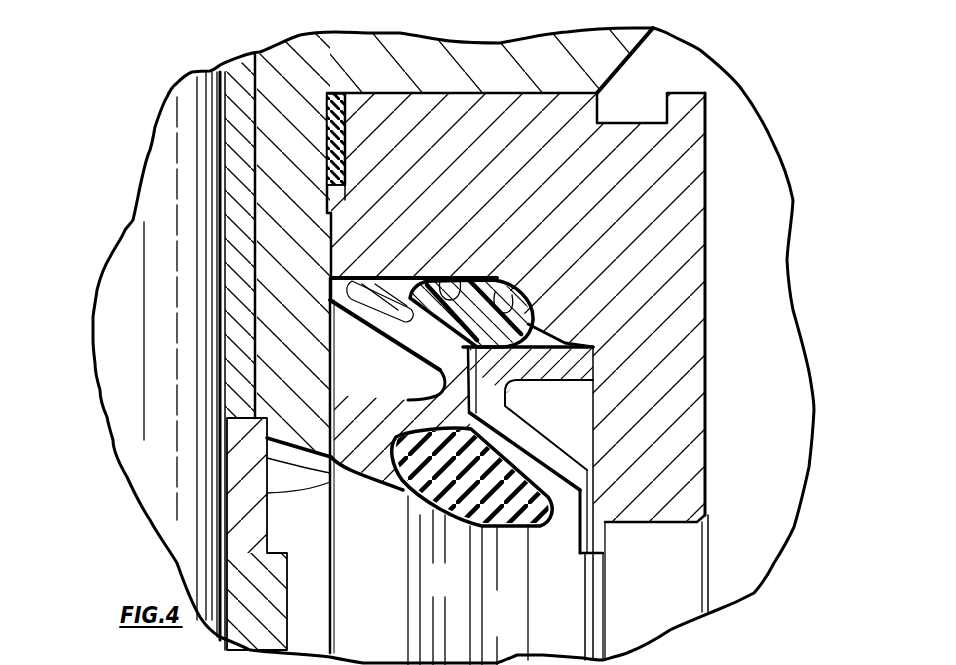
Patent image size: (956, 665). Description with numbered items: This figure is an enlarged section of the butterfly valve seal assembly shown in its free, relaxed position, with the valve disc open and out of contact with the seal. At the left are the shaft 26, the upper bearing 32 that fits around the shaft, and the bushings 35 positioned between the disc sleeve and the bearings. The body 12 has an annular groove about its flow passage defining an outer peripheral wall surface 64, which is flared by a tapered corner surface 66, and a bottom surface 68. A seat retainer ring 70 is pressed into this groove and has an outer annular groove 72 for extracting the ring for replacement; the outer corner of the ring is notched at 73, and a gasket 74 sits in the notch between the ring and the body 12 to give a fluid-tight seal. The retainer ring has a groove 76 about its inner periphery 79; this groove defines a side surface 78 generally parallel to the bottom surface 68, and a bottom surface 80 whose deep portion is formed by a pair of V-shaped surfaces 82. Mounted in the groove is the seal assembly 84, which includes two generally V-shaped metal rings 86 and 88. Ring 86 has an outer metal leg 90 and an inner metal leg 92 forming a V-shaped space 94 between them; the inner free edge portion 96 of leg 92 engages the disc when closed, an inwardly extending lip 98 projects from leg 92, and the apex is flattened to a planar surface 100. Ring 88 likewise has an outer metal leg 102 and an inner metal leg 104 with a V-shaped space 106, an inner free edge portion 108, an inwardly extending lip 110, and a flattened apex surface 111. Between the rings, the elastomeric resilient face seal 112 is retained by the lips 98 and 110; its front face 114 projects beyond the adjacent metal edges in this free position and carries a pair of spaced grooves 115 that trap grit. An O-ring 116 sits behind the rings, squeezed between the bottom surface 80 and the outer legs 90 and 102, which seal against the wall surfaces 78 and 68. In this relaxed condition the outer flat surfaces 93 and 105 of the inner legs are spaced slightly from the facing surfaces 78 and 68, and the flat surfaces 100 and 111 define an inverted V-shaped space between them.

The body 12 is at (440, 62).
The shaft 26 is at (183, 351).
The upper bearing 32 is at (233, 260).
The bushings 35 is at (227, 432).
The outer peripheral wall surface 64 is at (472, 98).
The tapered corner surface 66 is at (648, 45).
The bottom surface 68 is at (333, 212).
The seat retainer ring 70 is at (648, 198).
The outer annular groove 72 is at (638, 123).
The notch 73 is at (340, 137).
The gasket 74 is at (347, 125).
The groove 76 is at (590, 347).
The side surface 78 is at (590, 403).
The inner periphery 79 is at (667, 525).
The bottom surface 80 is at (378, 283).
The V-shaped surfaces 82 is at (455, 280).
The seal assembly 84 is at (340, 495).
The outer metal ring 86 is at (593, 350).
The outer metal ring 88 is at (387, 377).
The outer metal leg 90 is at (593, 367).
The inner metal leg 92 is at (550, 445).
The outer flat surface 93 is at (595, 500).
The V-shaped space 94 is at (545, 397).
The inner free edge portion 96 is at (600, 552).
The inwardly extending lip 98 is at (540, 533).
The flat surface 100 is at (472, 477).
The outer metal leg 102 is at (334, 327).
The inner metal leg 104 is at (393, 405).
The outer flat surface 105 is at (238, 455).
The V-shaped space 106 is at (330, 393).
The inner free edge portion 108 is at (238, 493).
The inwardly extending lip 110 is at (475, 485).
The flat surface 111 is at (580, 361).
The elastomeric resilient face seal 112 is at (466, 515).
The front face 114 is at (447, 522).
The grooves 115 is at (445, 503).
The O-ring 116 is at (330, 297).